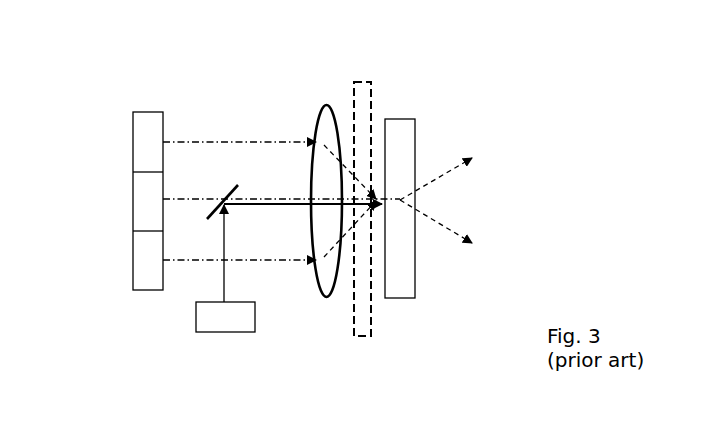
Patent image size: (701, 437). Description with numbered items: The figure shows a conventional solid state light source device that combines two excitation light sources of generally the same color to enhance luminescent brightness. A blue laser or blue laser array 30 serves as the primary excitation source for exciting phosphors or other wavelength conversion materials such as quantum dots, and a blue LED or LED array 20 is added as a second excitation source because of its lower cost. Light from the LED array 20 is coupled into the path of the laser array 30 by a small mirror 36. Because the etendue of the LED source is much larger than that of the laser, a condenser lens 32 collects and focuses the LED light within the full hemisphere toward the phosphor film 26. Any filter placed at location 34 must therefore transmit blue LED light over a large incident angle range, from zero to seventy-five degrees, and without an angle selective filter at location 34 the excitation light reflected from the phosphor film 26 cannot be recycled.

The blue LED or LED array 20 is at (217, 313).
The phosphor film 26 is at (415, 127).
The blue laser or blue laser array 30 is at (148, 193).
The condenser lens 32 is at (327, 127).
The filter location 34 is at (365, 318).
The small mirror 36 is at (232, 186).